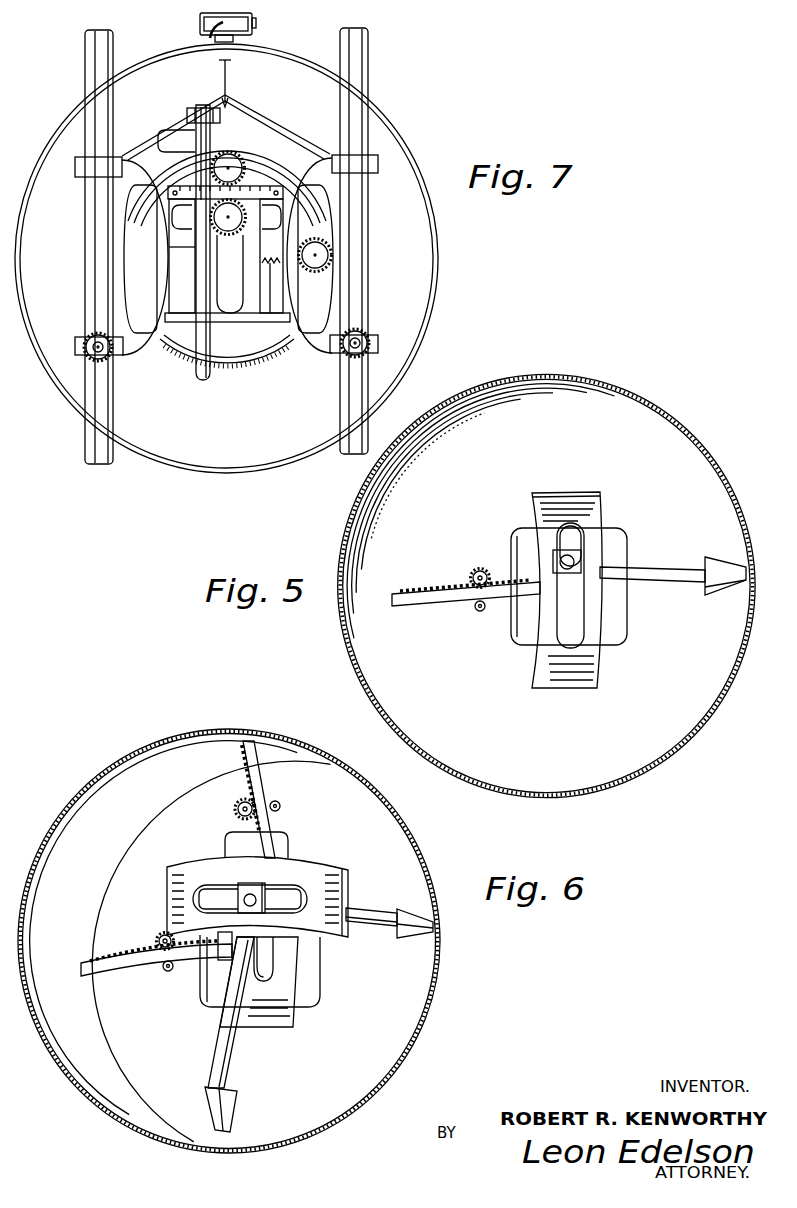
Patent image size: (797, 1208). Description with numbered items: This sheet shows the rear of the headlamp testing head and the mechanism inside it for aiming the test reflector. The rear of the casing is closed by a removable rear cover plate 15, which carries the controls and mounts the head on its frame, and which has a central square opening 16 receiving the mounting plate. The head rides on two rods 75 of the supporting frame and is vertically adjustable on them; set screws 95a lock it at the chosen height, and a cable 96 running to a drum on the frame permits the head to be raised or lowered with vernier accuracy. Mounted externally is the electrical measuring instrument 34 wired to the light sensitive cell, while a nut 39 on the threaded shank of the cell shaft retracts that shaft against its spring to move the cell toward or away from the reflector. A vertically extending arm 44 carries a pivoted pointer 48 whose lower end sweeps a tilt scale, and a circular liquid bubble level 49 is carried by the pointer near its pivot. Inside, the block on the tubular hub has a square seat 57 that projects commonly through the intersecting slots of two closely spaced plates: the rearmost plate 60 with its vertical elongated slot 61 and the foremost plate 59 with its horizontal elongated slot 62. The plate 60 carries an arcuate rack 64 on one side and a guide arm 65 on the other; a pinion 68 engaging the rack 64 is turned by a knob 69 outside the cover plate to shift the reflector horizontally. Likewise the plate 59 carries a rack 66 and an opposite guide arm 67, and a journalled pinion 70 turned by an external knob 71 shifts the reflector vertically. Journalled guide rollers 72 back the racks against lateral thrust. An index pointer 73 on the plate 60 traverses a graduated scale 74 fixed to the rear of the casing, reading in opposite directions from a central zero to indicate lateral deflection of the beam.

In FIG. 5, the rear cover plate 15 is at (468, 384).
In FIG. 6, the rear cover plate 15 is at (150, 747).
In FIG. 5, the square opening 16 is at (627, 634).
In FIG. 6, the square opening 16 is at (313, 980).
In FIG. 7, the electrical measuring instrument 34 is at (256, 24).
In FIG. 7, the nut 39 is at (229, 215).
In FIG. 7, the vertically extending arm 44 is at (197, 283).
In FIG. 7, the pointer 48 is at (212, 338).
In FIG. 7, the circular liquid bubble level 49 is at (182, 130).
In FIG. 5, the square seat 57 is at (582, 561).
In FIG. 6, the square seat 57 is at (273, 885).
In FIG. 6, the foremost slotted plate 59 is at (178, 889).
In FIG. 5, the rearmost slotted plate 60 is at (553, 505).
In FIG. 6, the rearmost slotted plate 60 is at (276, 1017).
In FIG. 5, the elongated slot 61 is at (562, 630).
In FIG. 6, the elongated slot 61 is at (268, 958).
In FIG. 6, the elongated slot 62 is at (217, 886).
In FIG. 7, the rack 64 is at (270, 270).
In FIG. 5, the rack 64 is at (436, 600).
In FIG. 6, the rack 64 is at (120, 968).
In FIG. 5, the guide arm 65 is at (667, 573).
In FIG. 6, the guide arm 65 is at (389, 923).
In FIG. 6, the rack 66 is at (259, 776).
In FIG. 6, the guide arm 67 is at (228, 1055).
In FIG. 5, the pinion 68 is at (481, 568).
In FIG. 6, the pinion 68 is at (158, 940).
In FIG. 7, the knob 69 is at (318, 256).
In FIG. 6, the pinion 70 is at (243, 802).
In FIG. 7, the knob 71 is at (233, 163).
In FIG. 5, the guide rollers 72 is at (481, 612).
In FIG. 6, the guide rollers 72 is at (281, 807).
In FIG. 7, the index pointer 73 is at (206, 196).
In FIG. 7, the graduated scale 74 is at (228, 192).
In FIG. 7, the rods 75 is at (90, 74).
In FIG. 7, the set screws 95a is at (93, 360).
In FIG. 7, the cable 96 is at (224, 81).